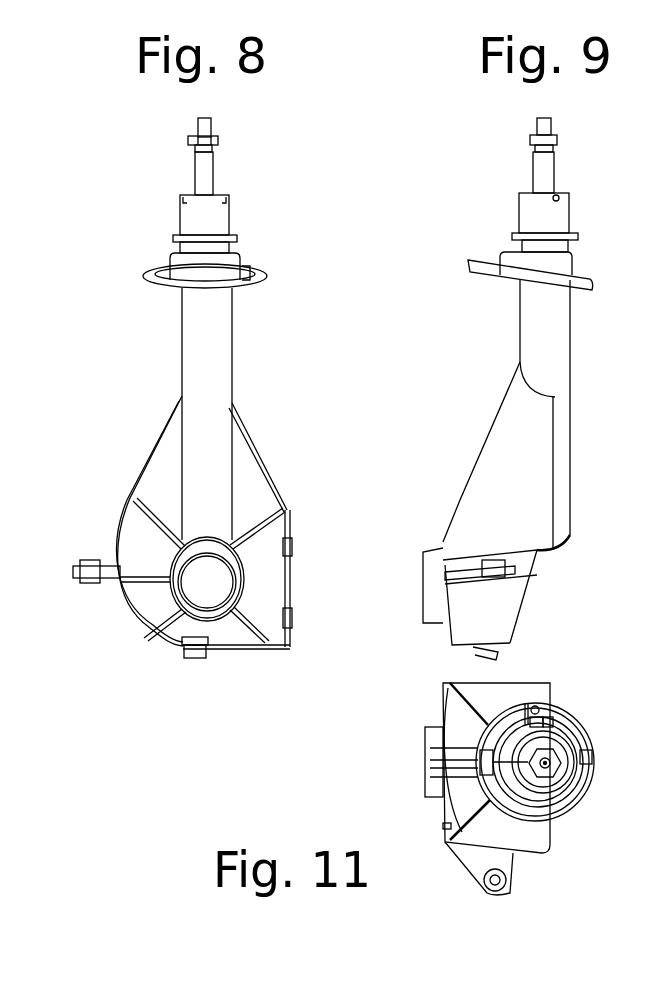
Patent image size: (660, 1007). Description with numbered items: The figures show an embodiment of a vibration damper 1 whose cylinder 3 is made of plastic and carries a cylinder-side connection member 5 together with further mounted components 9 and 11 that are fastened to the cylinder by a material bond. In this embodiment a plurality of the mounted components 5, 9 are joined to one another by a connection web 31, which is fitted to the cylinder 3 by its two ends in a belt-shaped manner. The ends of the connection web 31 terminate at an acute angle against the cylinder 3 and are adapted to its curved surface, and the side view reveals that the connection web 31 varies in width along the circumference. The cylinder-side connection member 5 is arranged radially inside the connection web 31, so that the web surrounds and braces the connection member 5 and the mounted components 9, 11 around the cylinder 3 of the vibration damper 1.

In FIG. 8, the vibration damper 1 is at (284, 188).
In FIG. 8, the cylinder 3 is at (220, 348).
In FIG. 8, the cylinder-side connection member 5 is at (212, 617).
In FIG. 8, the mounted component 9 is at (110, 566).
In FIG. 9, the mounted component 9 is at (515, 568).
In FIG. 8, the mounted component 11 is at (290, 547).
In FIG. 8, the connection web 31 is at (253, 647).
In FIG. 9, the connection web 31 is at (505, 527).
In FIG. 11, the connection web 31 is at (520, 692).